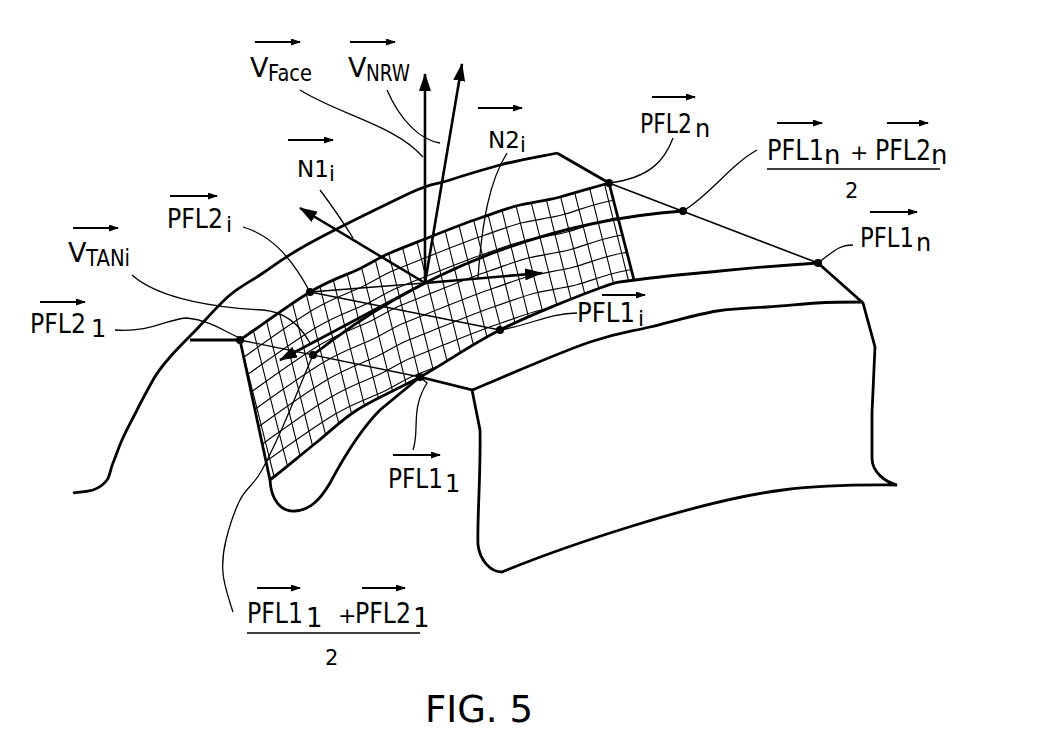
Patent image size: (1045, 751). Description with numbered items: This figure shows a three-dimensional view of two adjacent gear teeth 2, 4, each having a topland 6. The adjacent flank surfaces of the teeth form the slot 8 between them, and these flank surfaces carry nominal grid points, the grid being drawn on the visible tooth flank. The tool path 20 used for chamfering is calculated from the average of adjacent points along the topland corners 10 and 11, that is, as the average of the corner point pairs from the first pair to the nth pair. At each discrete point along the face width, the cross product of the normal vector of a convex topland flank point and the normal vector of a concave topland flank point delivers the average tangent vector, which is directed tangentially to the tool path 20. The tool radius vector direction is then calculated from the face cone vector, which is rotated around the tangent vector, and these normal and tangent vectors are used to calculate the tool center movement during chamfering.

The tooth 2 is at (192, 378).
The tooth 4 is at (450, 425).
The topland 6 is at (405, 215).
The slot 8 is at (333, 453).
The topland corner 10 is at (533, 195).
The topland corner 11 is at (723, 265).
The tool path 20 is at (560, 205).